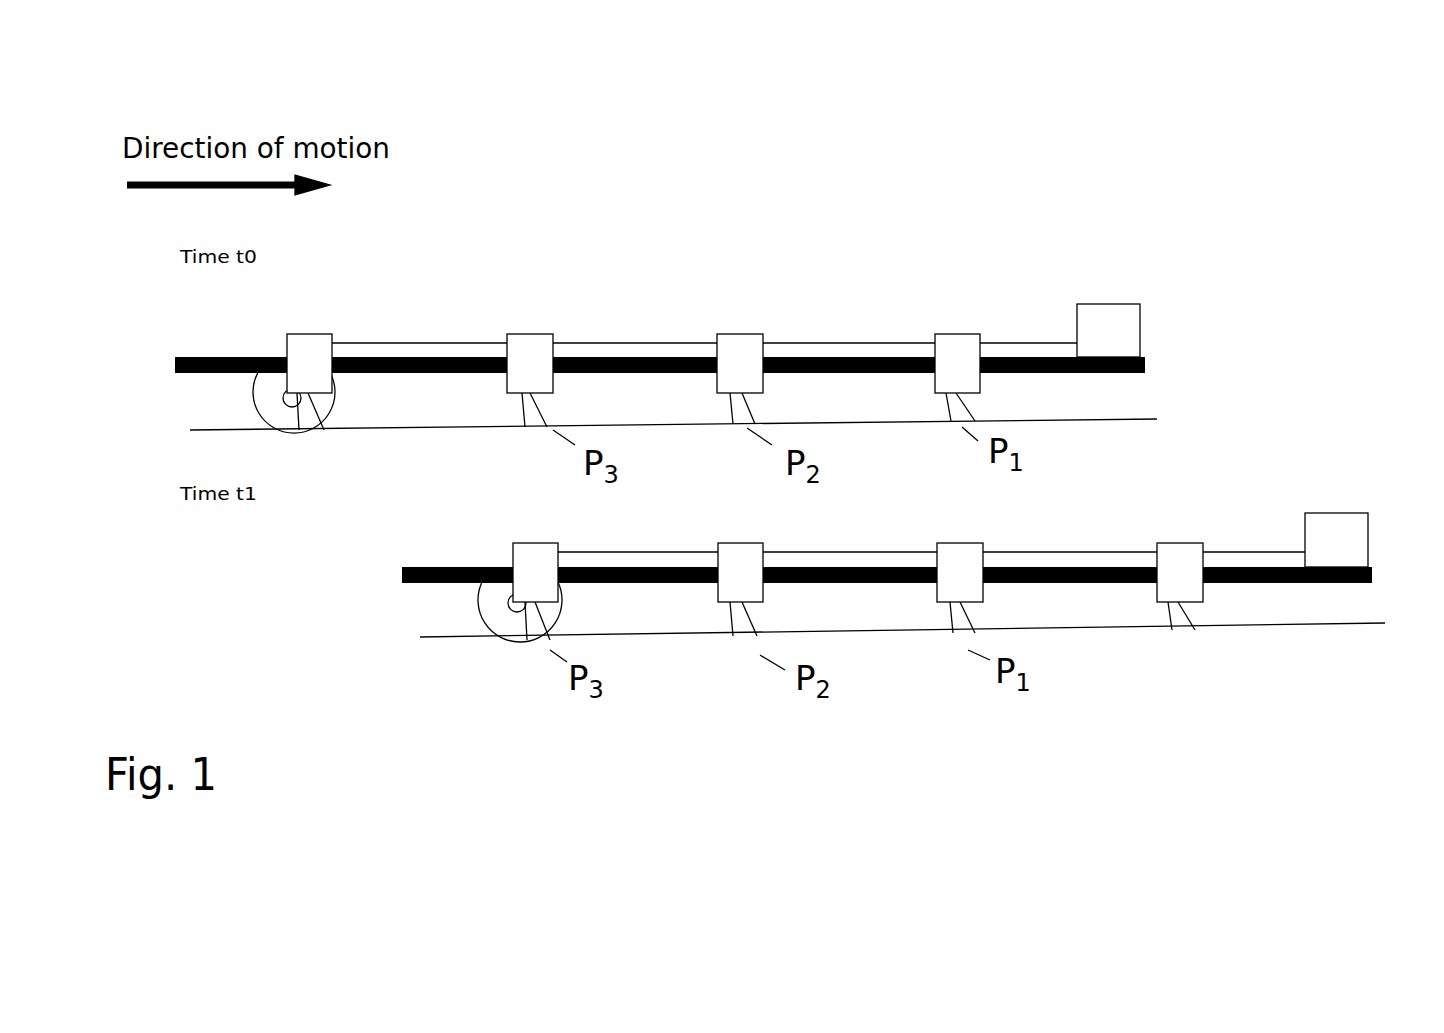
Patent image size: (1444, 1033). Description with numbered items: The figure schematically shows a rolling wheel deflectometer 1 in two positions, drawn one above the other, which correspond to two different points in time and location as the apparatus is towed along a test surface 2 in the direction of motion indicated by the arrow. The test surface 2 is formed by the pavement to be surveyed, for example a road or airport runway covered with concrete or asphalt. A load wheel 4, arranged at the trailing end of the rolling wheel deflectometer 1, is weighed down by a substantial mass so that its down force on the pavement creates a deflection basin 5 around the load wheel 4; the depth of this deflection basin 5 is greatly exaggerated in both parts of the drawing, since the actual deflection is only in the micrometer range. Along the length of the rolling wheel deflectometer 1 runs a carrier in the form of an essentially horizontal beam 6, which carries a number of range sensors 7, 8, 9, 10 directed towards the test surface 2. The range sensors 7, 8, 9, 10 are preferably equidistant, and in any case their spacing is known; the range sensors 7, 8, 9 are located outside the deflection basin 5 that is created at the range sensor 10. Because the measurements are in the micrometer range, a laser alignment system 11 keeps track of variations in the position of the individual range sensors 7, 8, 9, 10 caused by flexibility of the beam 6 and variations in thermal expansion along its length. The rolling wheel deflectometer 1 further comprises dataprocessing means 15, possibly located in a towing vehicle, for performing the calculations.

The rolling wheel deflectometer 1 is at (733, 240).
The test surface 2 is at (1135, 418).
The load wheel 4 is at (253, 395).
The deflection basin 5 is at (297, 433).
The beam 6 is at (243, 355).
The range sensor 7 is at (965, 350).
The range sensor 8 is at (745, 343).
The range sensor 9 is at (543, 343).
The range sensor 10 is at (325, 345).
The laser alignment system 11 is at (827, 343).
The dataprocessing means 15 is at (1104, 304).